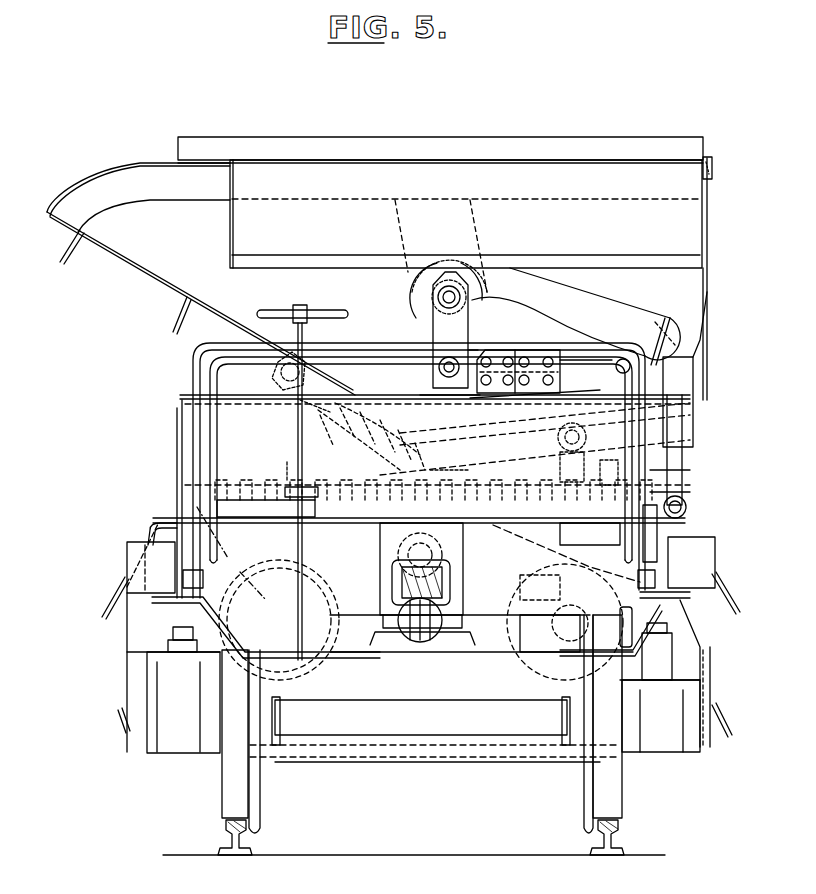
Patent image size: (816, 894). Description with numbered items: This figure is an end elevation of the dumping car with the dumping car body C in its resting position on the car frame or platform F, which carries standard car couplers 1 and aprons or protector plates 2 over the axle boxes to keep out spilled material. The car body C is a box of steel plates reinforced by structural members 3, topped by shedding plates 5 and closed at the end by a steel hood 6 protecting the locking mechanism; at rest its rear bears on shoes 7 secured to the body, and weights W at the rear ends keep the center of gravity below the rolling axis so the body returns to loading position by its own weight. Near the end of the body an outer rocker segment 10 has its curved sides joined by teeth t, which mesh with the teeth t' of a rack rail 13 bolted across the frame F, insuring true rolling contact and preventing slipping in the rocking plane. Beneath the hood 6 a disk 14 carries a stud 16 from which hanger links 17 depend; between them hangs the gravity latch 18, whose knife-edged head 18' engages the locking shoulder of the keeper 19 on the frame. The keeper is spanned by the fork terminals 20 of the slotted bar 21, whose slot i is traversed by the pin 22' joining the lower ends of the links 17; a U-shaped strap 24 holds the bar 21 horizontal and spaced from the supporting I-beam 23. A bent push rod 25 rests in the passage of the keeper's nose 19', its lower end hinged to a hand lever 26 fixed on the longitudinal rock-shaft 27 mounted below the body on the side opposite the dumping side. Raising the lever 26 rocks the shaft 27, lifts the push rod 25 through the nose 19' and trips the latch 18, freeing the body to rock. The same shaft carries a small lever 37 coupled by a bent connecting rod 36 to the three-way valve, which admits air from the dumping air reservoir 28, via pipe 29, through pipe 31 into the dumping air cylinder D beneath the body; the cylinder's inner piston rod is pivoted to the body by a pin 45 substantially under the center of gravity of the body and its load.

The car coupler 1 is at (395, 640).
The apron or protector plate 2 is at (228, 556).
The structural member 3 is at (522, 440).
The shedding plate 5 is at (531, 138).
The hood 6 is at (694, 218).
The shoe 7 is at (611, 470).
The outer rocker segment 10 is at (333, 437).
The rack rail 13 is at (250, 482).
The disk 14 is at (420, 290).
The pin or stud 16 is at (440, 293).
The hanger link 17 is at (437, 320).
The gravity latch or lock bar 18 is at (576, 314).
The knife-edged head 18' is at (678, 332).
The keeper 19 is at (535, 418).
The nose 19' is at (703, 333).
The fork terminal 20 is at (585, 364).
The slotted bar 21 is at (275, 375).
The pin 22' is at (450, 387).
The I-beam 23 is at (188, 400).
The U-shaped strap 24 is at (495, 352).
The push rod 25 is at (682, 468).
The hand lever 26 is at (705, 639).
The rock-shaft 27 is at (687, 507).
The dumping air reservoir 28 is at (435, 720).
The pipe 29 is at (380, 530).
The pipe 31 is at (538, 585).
The bent connecting rod 36 is at (640, 520).
The small lever 37 is at (690, 494).
The pin 45 is at (580, 432).
The dumping car body C is at (708, 292).
The dumping air cylinder D is at (530, 630).
The car frame or platform F is at (200, 598).
The weight W is at (696, 406).
The slot i is at (333, 368).
The tooth t is at (296, 414).
The tooth t' is at (286, 459).